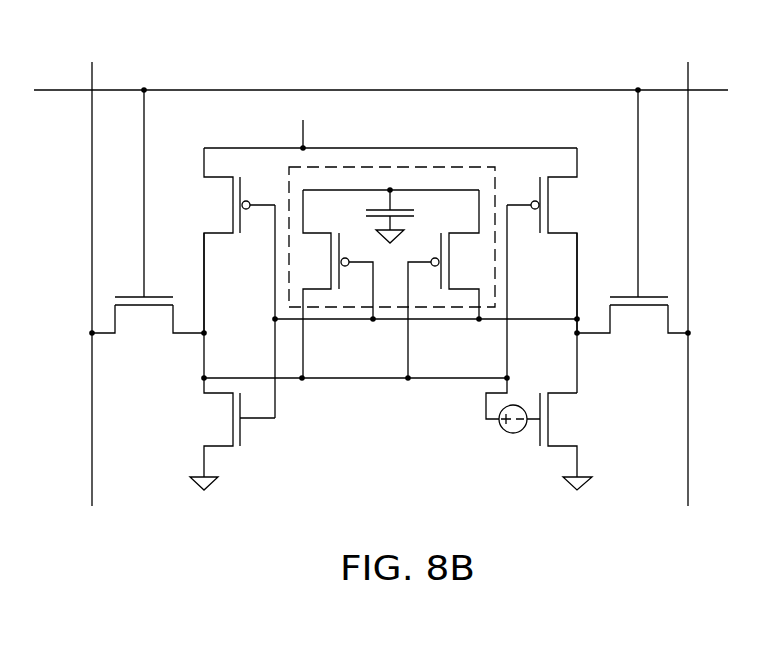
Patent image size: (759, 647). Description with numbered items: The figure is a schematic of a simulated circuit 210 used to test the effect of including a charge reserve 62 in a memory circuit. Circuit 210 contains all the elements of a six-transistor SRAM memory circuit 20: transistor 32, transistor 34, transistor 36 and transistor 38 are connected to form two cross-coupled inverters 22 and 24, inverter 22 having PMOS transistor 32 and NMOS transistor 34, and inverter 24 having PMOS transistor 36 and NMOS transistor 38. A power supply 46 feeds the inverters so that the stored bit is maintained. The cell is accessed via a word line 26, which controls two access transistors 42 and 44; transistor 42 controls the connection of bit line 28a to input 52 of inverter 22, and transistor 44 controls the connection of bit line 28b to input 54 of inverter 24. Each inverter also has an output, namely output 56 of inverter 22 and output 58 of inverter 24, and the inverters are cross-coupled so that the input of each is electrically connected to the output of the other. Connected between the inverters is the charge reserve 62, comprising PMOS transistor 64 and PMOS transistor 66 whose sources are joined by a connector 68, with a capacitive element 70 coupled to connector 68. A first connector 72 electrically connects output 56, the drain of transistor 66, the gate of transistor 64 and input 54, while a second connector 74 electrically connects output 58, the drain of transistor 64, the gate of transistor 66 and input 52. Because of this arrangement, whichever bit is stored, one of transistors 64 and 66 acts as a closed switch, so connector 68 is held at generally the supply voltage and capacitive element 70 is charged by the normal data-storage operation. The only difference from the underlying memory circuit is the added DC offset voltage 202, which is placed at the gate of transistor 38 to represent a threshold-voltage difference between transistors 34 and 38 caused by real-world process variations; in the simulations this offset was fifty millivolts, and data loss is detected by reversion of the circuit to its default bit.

The simulated circuit 210 is at (632, 54).
The memory circuit 20 is at (155, 520).
The inverter 22 is at (272, 452).
The inverter 24 is at (510, 455).
The word line 26 is at (555, 90).
The bit line 28a is at (92, 395).
The bit line 28b is at (688, 395).
The transistor 32 is at (225, 214).
The transistor 34 is at (225, 428).
The transistor 36 is at (581, 214).
The transistor 38 is at (581, 428).
The access transistor 42 is at (153, 334).
The access transistor 44 is at (648, 334).
The power supply 46 is at (300, 120).
The input 52 is at (204, 275).
The input 54 is at (577, 273).
The output 56 is at (275, 344).
The output 58 is at (507, 340).
The charge reserve 62 is at (470, 162).
The transistor 64 is at (325, 267).
The transistor 66 is at (480, 267).
The connector 68 is at (388, 186).
The capacitive element 70 is at (400, 205).
The first connector 72 is at (455, 320).
The second connector 74 is at (358, 380).
The DC offset voltage 202 is at (500, 431).